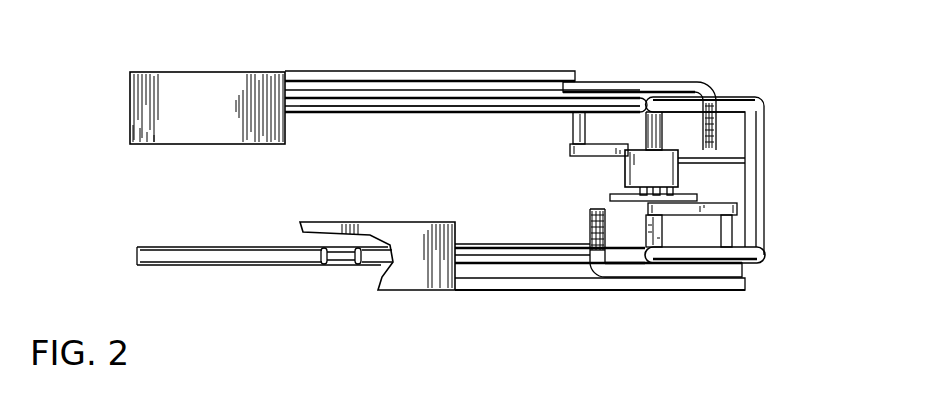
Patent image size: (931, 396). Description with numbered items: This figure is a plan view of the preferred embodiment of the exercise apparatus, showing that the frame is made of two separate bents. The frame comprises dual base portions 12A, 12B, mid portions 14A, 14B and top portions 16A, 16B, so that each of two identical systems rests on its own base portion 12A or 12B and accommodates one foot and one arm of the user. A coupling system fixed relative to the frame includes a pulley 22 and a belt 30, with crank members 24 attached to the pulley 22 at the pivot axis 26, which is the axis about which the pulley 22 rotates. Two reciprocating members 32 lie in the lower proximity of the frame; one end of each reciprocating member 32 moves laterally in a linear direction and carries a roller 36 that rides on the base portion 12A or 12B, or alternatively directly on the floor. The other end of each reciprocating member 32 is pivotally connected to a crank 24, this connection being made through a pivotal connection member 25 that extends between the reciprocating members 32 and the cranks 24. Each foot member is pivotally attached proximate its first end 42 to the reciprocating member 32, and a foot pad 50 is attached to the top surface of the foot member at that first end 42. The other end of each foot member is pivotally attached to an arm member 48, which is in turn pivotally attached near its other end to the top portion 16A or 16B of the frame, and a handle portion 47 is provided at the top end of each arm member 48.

The base portion 12A is at (344, 112).
The base portion 12B is at (218, 256).
The mid portion 14A is at (762, 100).
The mid portion 14B is at (763, 257).
The top portion 16A is at (737, 92).
The top portion 16B is at (709, 288).
The pulley 22 is at (734, 180).
The belt 30 is at (698, 197).
The crank member 24 is at (570, 151).
The pivotal connection member 25 is at (575, 125).
The pivot axis 26 is at (625, 172).
The reciprocating member 32 is at (413, 106).
The roller 36 is at (342, 257).
The first end 42 is at (433, 72).
The handle portion 47 is at (716, 128).
The arm member 48 is at (629, 84).
The foot pad 50 is at (196, 82).